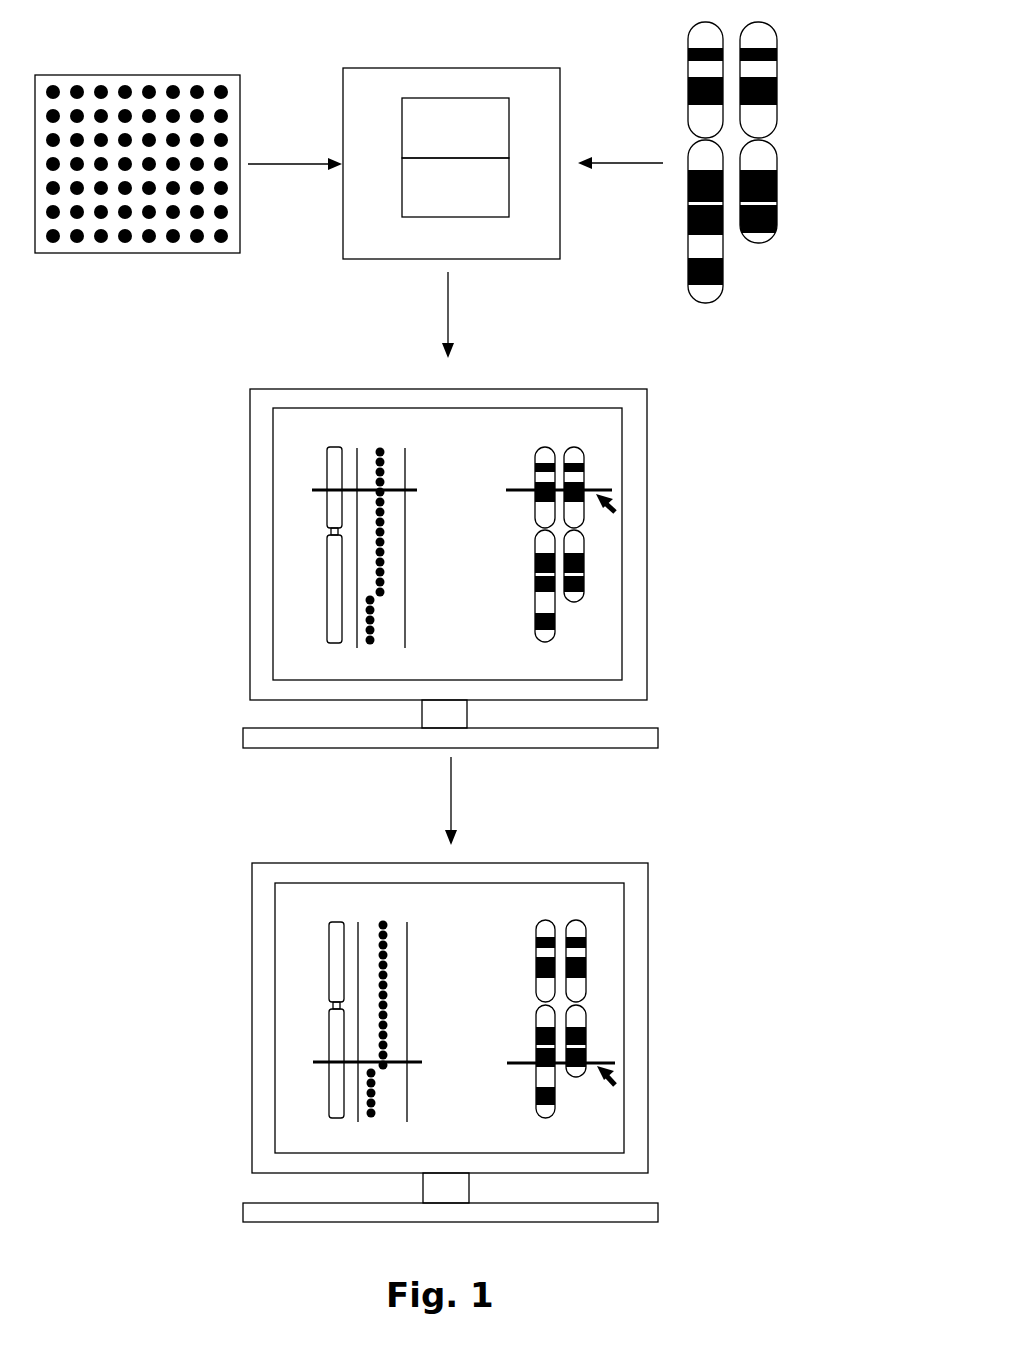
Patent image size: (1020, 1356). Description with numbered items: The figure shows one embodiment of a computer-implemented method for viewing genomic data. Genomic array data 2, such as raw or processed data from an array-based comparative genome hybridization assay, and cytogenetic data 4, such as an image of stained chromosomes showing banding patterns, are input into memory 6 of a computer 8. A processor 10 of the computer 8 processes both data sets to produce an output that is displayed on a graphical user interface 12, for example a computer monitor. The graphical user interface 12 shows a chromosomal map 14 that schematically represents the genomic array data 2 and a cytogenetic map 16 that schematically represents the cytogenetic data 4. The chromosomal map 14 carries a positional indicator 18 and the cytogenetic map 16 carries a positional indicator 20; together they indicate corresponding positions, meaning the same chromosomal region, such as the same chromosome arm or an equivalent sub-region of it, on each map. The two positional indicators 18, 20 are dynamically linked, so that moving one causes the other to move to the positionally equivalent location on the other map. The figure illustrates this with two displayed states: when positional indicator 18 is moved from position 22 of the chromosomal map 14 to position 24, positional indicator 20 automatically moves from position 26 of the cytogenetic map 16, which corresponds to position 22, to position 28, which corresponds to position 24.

The genomic array data 2 is at (112, 248).
The cytogenetic data 4 is at (752, 287).
The memory 6 is at (455, 128).
The computer 8 is at (451, 163).
The processor 10 is at (455, 187).
The graphical user interface 12 is at (220, 385).
The chromosomal map 14 is at (353, 425).
The cytogenetic map 16 is at (558, 425).
The positional indicator 18 is at (312, 489).
The positional indicator 20 is at (600, 485).
The position 22 is at (420, 497).
The position 24 is at (403, 1072).
The position 26 is at (520, 497).
The position 28 is at (568, 1092).